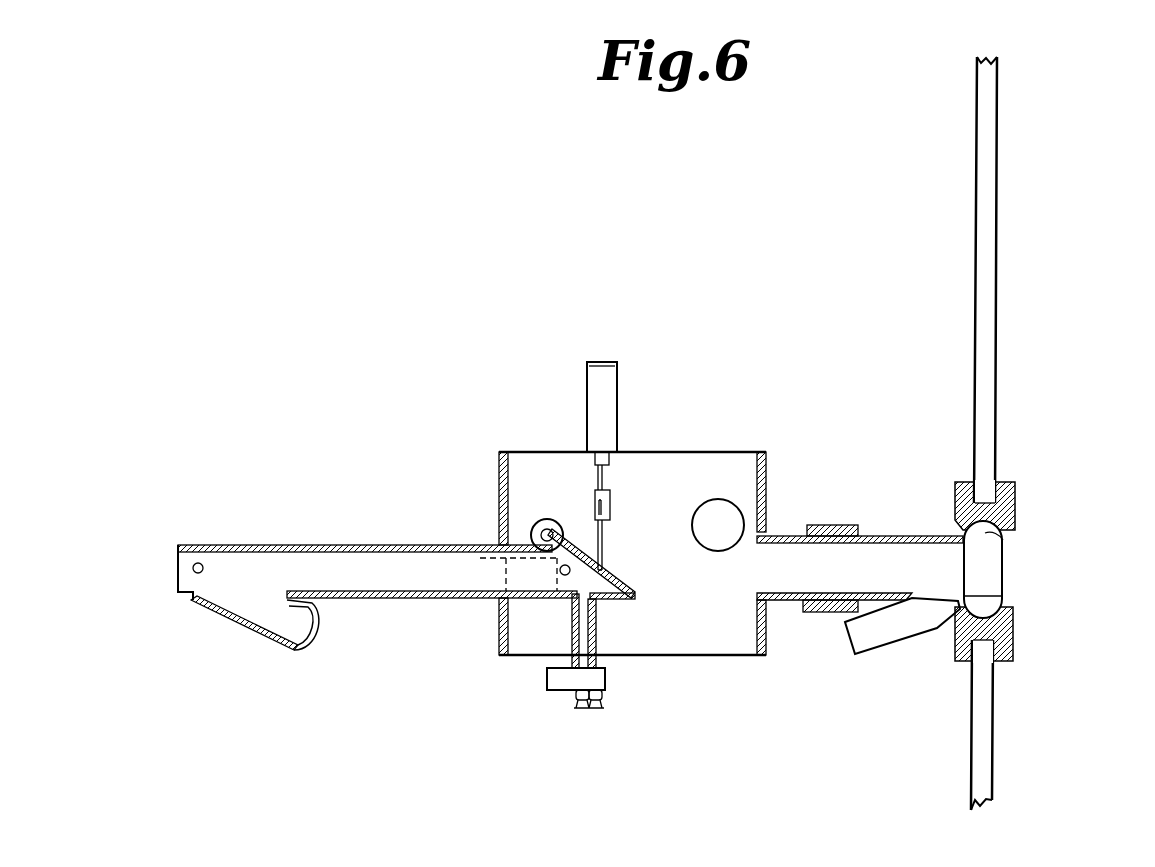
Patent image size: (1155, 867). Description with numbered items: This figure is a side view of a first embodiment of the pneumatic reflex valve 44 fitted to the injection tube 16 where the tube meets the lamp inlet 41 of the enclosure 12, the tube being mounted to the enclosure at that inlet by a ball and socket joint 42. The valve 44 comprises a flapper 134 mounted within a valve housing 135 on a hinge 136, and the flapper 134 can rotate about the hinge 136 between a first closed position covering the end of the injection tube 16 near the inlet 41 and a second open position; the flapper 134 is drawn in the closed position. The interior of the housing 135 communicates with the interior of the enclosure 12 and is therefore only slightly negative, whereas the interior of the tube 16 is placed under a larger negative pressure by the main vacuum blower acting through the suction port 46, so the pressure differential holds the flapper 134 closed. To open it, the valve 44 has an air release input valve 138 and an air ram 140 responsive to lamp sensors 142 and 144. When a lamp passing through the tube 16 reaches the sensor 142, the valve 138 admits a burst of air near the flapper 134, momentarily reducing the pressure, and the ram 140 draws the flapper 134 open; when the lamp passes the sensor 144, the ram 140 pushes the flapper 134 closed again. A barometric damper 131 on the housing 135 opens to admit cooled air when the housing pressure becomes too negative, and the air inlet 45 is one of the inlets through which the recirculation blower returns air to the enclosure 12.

The housing or enclosure 12 is at (983, 220).
The injection tube 16 is at (314, 583).
The lamp inlet 41 is at (992, 575).
The ball and socket joint 42 is at (985, 532).
The pneumatic reflex valve 44 is at (482, 389).
The air inlet 45 is at (883, 647).
The suction port 46 is at (298, 649).
The barometric damper 131 is at (728, 522).
The flapper 134 is at (623, 575).
The valve housing 135 is at (562, 450).
The hinge 136 is at (532, 530).
The air release input valve 138 is at (605, 675).
The air ram 140 is at (610, 378).
The lamp sensor 142 is at (192, 568).
The lamp sensor 144 is at (564, 576).